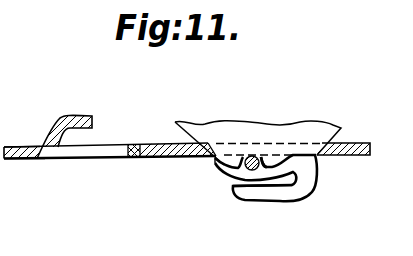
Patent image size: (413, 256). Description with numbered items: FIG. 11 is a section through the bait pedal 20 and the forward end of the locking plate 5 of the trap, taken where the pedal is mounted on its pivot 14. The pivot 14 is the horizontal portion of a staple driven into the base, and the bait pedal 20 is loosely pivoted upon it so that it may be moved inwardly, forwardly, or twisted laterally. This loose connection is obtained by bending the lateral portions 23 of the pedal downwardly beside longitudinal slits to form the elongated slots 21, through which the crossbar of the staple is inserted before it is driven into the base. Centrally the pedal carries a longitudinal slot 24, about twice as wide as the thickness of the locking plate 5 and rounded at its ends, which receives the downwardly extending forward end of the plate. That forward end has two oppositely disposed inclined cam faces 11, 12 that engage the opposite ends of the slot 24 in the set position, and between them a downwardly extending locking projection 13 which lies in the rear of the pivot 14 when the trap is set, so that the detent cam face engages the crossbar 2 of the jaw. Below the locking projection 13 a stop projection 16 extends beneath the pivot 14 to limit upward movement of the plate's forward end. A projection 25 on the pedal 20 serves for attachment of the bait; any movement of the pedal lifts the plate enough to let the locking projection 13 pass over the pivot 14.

The crossbar 2 is at (22, 135).
The locking plate 5 is at (296, 127).
The inclined cam face 11 is at (198, 127).
The inclined cam face 12 is at (330, 126).
The locking projection 13 is at (272, 157).
The pivot 14 is at (251, 155).
The stop projection 16 is at (266, 193).
The bait pedal 20 is at (136, 158).
The elongated slot 21 is at (222, 172).
The lateral portion 23 is at (216, 167).
The longitudinal slot 24 is at (208, 166).
The projection 25 is at (68, 115).